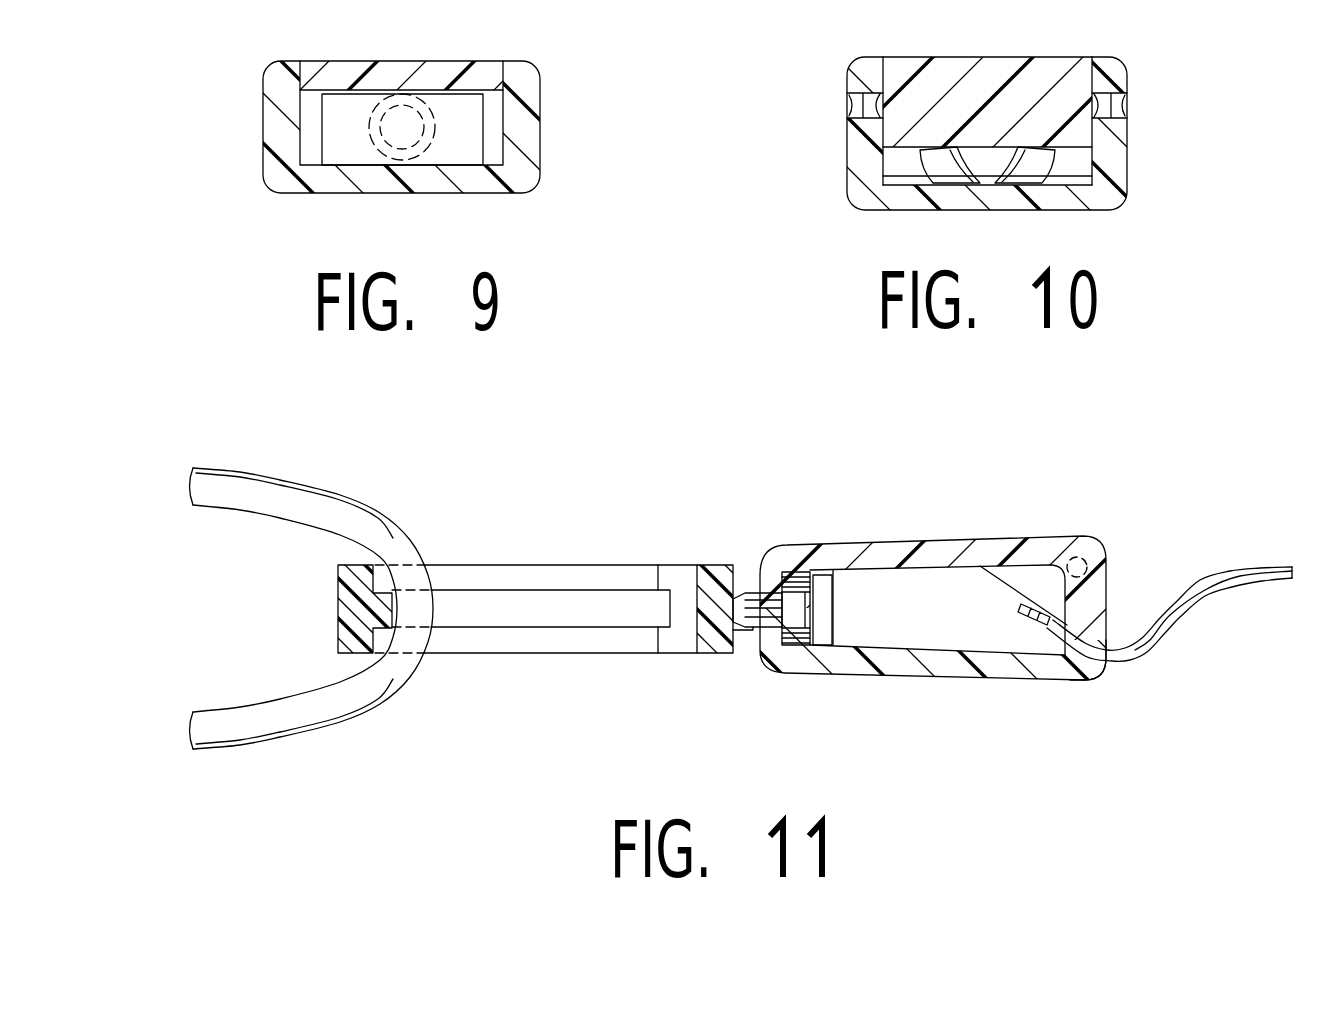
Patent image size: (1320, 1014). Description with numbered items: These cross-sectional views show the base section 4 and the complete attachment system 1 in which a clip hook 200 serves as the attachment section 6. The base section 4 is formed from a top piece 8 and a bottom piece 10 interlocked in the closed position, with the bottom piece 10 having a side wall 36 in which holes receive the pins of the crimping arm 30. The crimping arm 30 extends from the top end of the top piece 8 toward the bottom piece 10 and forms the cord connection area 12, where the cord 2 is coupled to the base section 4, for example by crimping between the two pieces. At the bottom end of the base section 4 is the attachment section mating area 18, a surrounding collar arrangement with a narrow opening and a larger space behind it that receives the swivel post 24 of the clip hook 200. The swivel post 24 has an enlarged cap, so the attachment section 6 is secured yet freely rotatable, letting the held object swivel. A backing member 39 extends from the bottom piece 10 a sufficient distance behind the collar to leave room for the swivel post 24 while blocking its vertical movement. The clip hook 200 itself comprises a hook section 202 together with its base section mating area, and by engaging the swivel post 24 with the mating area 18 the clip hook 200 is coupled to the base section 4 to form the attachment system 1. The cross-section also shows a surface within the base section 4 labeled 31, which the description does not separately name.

In FIG. 11, the attachment system 1 is at (702, 472).
In FIG. 11, the cord 2 is at (1255, 590).
In FIG. 11, the base section 4 is at (918, 678).
In FIG. 11, the attachment section 6 is at (475, 563).
In FIG. 9, the top piece 8 is at (400, 60).
In FIG. 11, the top piece 8 is at (928, 540).
In FIG. 9, the bottom piece 10 is at (405, 195).
In FIG. 11, the bottom piece 10 is at (1090, 682).
In FIG. 11, the cord connection area 12 is at (1048, 680).
In FIG. 11, the attachment section mating area 18 is at (763, 555).
In FIG. 11, the swivel post 24 is at (753, 632).
In FIG. 11, the crimping arm 30 is at (1105, 563).
In FIG. 11, the ramp 31 is at (1067, 625).
In FIG. 9, the side wall 36 is at (542, 125).
In FIG. 11, the backing member 39 is at (833, 612).
In FIG. 11, the clip hook 200 is at (583, 563).
In FIG. 11, the hook section 202 is at (337, 607).